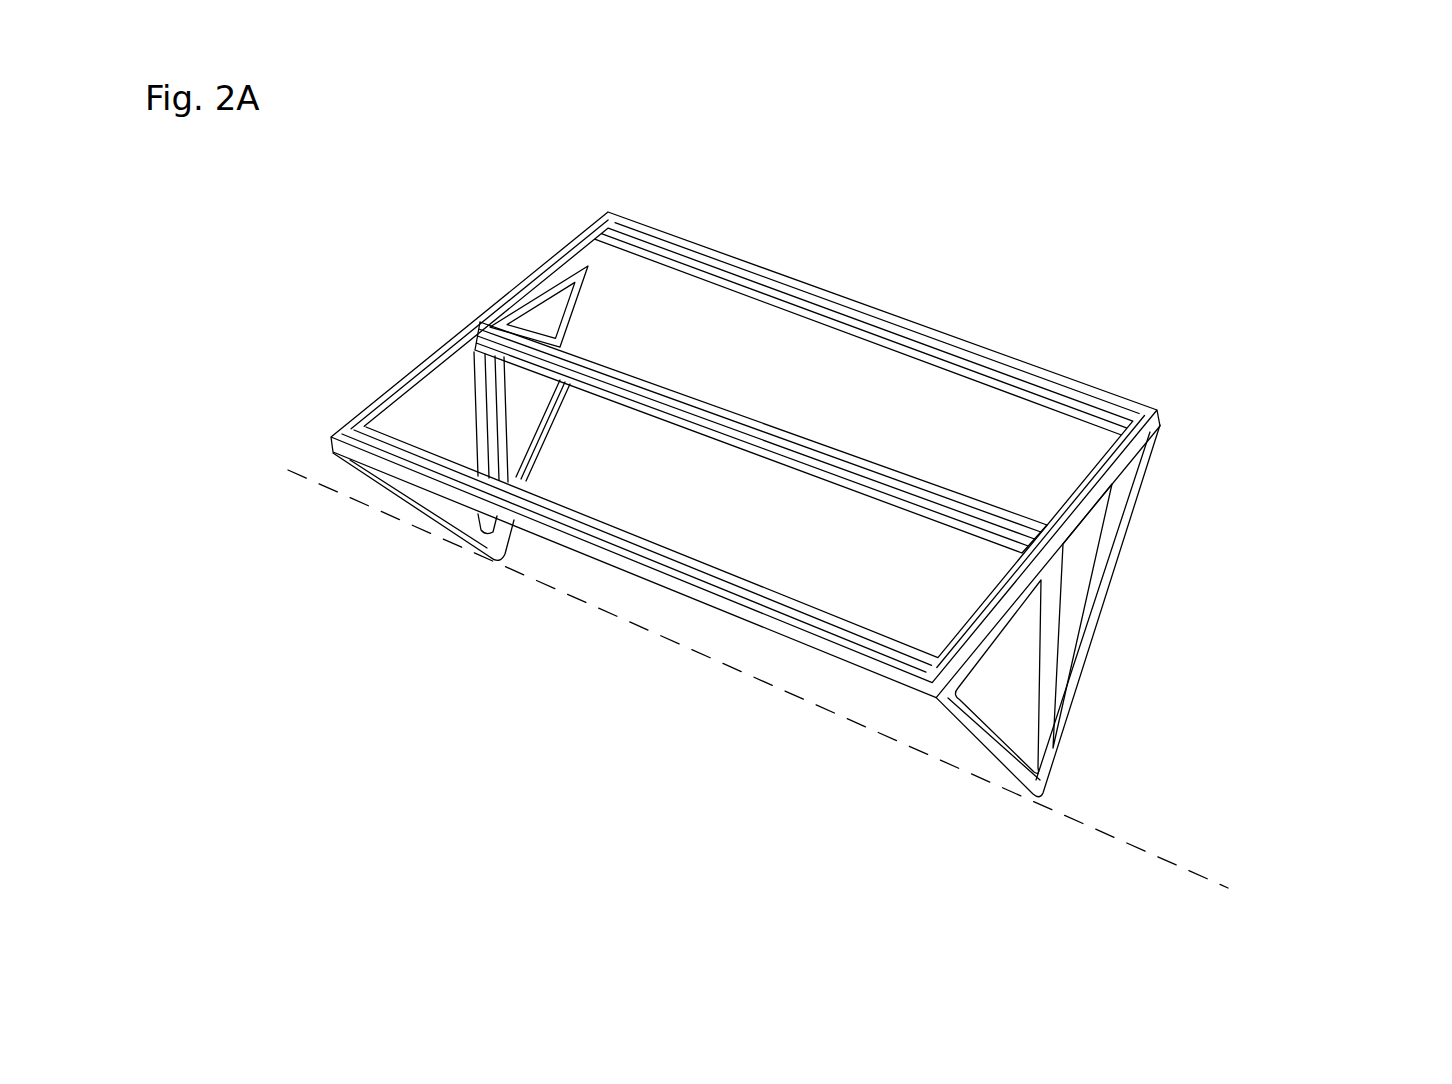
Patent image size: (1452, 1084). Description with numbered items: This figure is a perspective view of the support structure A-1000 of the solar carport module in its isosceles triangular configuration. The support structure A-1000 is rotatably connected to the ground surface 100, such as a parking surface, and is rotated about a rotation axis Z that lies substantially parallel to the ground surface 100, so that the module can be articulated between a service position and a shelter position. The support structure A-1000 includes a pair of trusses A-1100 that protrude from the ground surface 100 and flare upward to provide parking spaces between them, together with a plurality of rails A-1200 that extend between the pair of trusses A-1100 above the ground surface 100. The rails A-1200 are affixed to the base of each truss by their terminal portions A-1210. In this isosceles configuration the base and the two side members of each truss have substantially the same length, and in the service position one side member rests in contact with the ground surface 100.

The ground surface 100 is at (897, 918).
The support structure A-1000 is at (349, 364).
The pair of trusses A-1100 is at (916, 768).
The plurality of rails A-1200 is at (950, 335).
The terminal portions A-1210 is at (1153, 442).
The rotation axis Z is at (1127, 837).